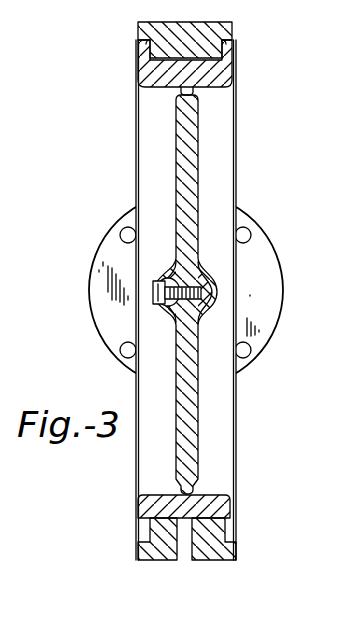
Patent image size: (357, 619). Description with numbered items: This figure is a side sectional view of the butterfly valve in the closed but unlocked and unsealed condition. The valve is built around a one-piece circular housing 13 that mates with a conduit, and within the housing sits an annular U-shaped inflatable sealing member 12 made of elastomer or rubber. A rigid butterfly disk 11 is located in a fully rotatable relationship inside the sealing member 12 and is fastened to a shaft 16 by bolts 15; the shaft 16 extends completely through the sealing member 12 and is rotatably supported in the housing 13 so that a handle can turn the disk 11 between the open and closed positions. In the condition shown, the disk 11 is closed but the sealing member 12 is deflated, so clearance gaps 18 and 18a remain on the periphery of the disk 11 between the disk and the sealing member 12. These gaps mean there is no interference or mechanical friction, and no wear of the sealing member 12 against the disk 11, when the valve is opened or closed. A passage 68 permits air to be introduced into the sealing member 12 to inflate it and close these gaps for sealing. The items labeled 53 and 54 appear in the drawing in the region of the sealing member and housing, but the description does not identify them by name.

The butterfly disk 11 is at (198, 150).
The annular U-shaped inflatable sealing member 12 is at (137, 77).
The circular housing 13 is at (139, 25).
The bolts 15 is at (153, 282).
The shaft 16 is at (172, 310).
The gap 18 is at (193, 490).
The gap 18a is at (199, 91).
The hub 53 is at (139, 47).
The seal 54 is at (235, 45).
The passage 68 is at (190, 547).